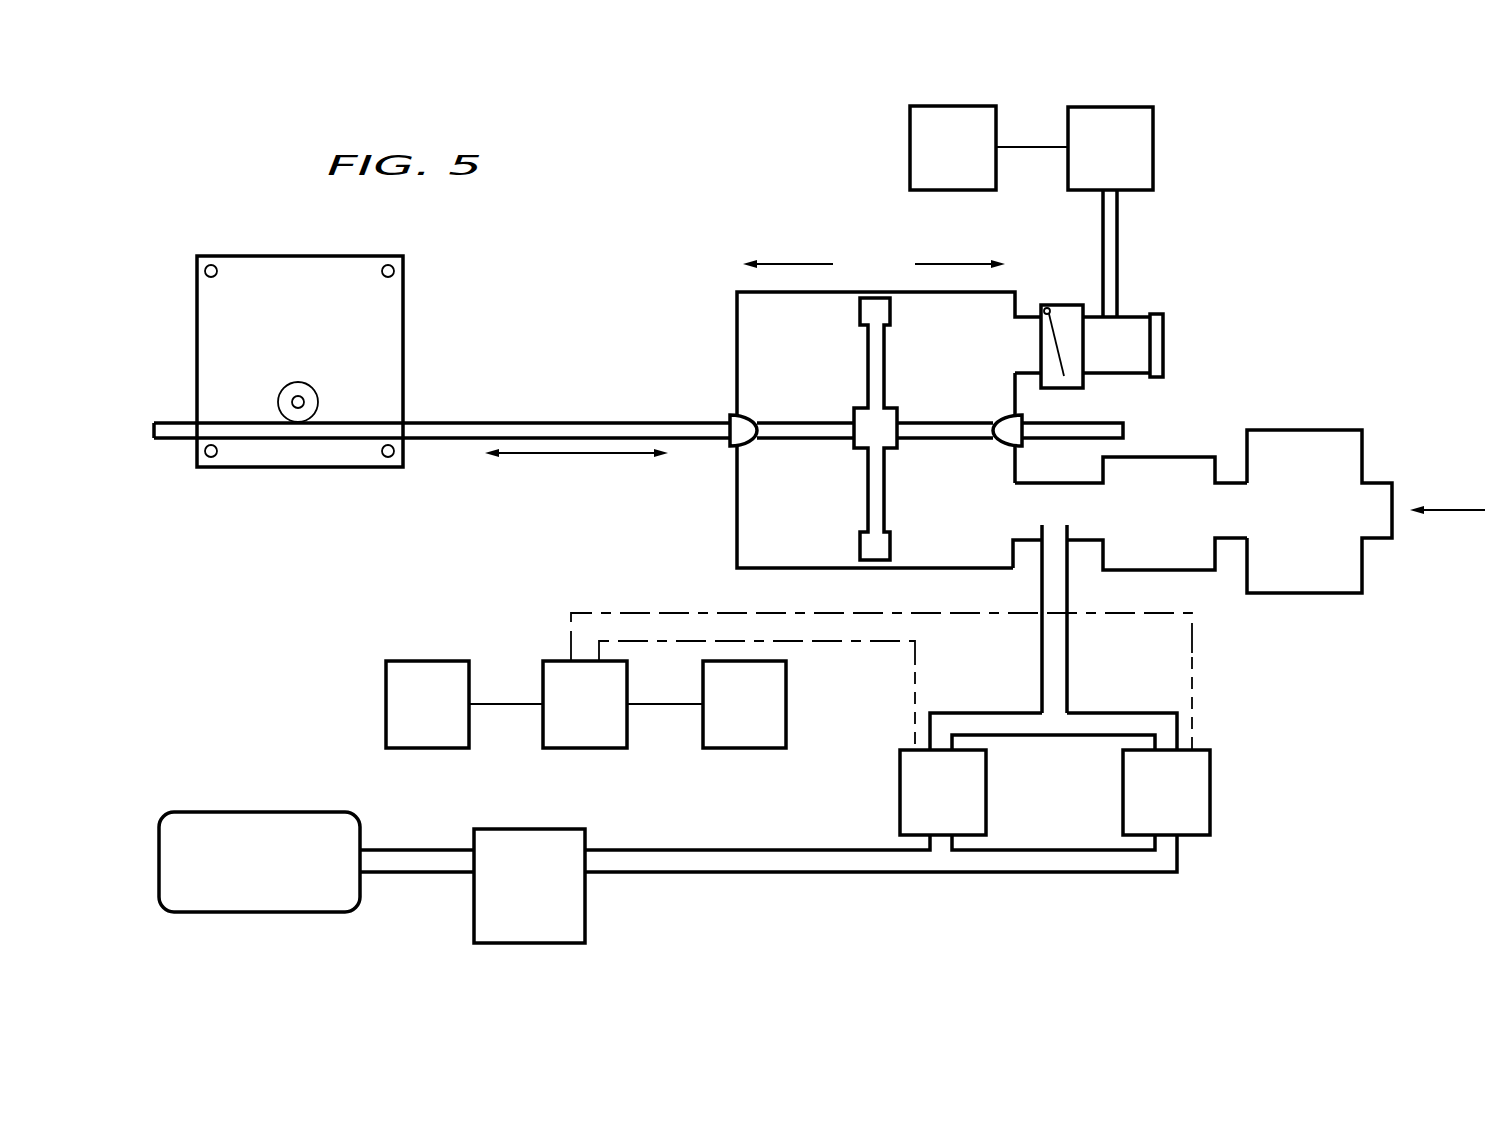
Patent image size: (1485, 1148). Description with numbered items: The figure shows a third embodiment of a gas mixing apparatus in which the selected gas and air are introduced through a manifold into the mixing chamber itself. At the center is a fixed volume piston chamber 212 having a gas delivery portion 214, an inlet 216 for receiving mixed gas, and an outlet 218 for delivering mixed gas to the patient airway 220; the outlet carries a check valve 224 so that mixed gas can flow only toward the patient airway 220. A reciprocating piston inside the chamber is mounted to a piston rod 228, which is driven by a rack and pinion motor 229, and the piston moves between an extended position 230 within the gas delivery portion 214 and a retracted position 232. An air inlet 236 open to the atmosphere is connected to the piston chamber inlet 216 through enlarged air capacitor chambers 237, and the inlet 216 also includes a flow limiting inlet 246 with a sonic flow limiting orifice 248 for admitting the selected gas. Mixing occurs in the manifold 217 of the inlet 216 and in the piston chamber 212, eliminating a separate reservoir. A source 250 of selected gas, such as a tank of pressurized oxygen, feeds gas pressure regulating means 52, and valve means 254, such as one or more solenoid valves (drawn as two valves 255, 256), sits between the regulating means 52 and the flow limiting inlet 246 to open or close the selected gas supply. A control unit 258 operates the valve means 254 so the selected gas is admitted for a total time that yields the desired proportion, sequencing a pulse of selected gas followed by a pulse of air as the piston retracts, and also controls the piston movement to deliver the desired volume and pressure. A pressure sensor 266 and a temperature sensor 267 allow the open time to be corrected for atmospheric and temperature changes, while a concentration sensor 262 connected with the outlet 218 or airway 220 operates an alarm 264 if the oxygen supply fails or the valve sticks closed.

The gas pressure regulating means 52 is at (527, 838).
The fixed volume piston chamber 212 is at (737, 520).
The gas delivery portion 214 is at (970, 557).
The inlet 216 is at (1023, 543).
The manifold 217 is at (1083, 480).
The outlet 218 is at (1028, 317).
The patient airway 220 is at (1135, 317).
The check valve 224 is at (1072, 390).
The piston rod 228 is at (582, 422).
The rack and pinion motor 229 is at (407, 335).
The extended position 230 is at (943, 263).
The retracted position 232 is at (788, 262).
The air inlet 236 is at (1375, 542).
The air capacitor chambers 237 is at (1277, 587).
The flow limiting inlet 246 is at (1070, 643).
The sonic flow limiting orifice 248 is at (1047, 527).
The source of the selected gas 250 is at (280, 826).
The valve means 254 is at (1276, 742).
The first valve 255 is at (918, 795).
The second valve 256 is at (1192, 790).
The control unit 258 is at (554, 672).
The sensor of the concentration of the selected gas 262 is at (1133, 153).
The alarm 264 is at (930, 155).
The pressure sensor 266 is at (424, 670).
The temperature sensor 267 is at (741, 731).